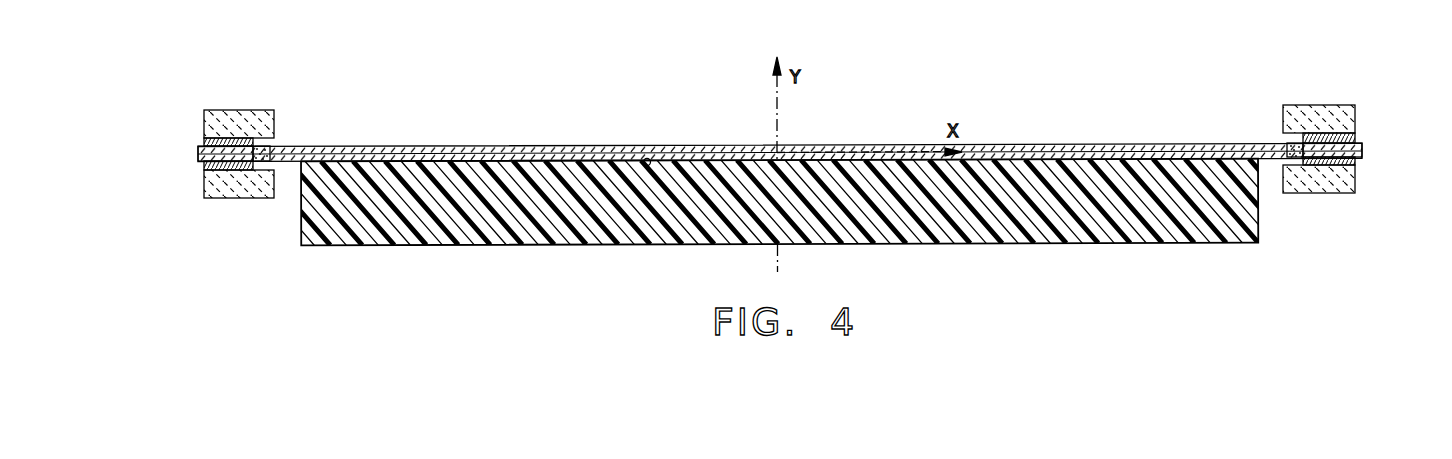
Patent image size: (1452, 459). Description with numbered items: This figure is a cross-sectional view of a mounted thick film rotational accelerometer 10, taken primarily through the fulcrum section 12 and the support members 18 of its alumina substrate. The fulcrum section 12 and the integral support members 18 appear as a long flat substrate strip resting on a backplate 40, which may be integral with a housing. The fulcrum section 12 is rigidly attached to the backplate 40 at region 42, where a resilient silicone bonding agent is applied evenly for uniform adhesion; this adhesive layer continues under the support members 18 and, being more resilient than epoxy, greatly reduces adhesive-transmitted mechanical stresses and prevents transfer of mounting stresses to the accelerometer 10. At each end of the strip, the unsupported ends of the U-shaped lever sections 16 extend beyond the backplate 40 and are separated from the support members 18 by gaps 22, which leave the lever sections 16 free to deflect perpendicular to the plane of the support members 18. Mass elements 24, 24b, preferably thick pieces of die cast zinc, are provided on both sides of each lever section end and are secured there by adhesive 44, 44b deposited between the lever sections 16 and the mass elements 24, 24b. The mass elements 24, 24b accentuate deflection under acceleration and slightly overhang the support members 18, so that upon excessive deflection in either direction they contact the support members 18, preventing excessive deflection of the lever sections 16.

The thick film rotational accelerometer 10 is at (747, 110).
The fulcrum section 12 is at (1047, 150).
The U-shaped lever sections 16 is at (203, 156).
The support members 18 is at (457, 155).
The gaps 22 is at (263, 148).
The mass element 24 is at (228, 120).
The mass element 24b is at (230, 190).
The backplate 40 is at (515, 247).
The region 42 is at (645, 159).
The adhesive 44 is at (207, 143).
The adhesive 44b is at (202, 167).